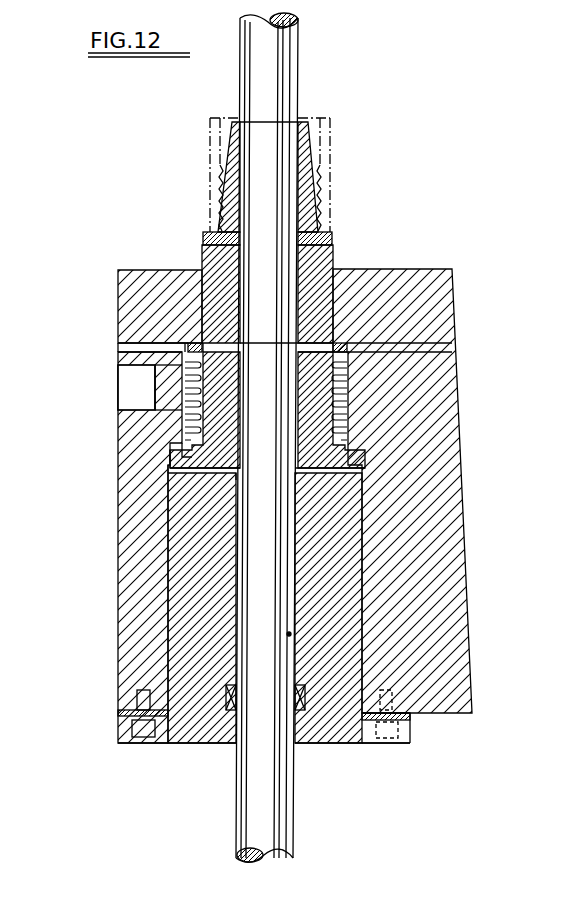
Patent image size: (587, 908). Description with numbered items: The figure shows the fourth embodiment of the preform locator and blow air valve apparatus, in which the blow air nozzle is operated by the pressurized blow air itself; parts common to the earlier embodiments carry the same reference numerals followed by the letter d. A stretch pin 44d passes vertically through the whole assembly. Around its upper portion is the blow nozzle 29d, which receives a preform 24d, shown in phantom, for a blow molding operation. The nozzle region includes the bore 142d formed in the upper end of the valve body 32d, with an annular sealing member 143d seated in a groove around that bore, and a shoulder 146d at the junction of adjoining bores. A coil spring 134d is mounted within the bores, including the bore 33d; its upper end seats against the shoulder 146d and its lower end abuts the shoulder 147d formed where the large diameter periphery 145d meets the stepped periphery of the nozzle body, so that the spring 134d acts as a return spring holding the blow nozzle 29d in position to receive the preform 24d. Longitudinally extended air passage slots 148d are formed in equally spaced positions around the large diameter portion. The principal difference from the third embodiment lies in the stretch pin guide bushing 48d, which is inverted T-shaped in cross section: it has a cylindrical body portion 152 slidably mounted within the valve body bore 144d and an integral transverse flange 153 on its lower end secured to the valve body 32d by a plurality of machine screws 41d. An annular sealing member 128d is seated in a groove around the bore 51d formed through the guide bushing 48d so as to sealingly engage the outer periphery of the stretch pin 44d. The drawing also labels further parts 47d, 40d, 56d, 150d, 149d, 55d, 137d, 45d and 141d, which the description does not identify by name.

The stretch pin 44d is at (303, 78).
The bore 47d is at (298, 120).
The gland sleeve 40d is at (308, 150).
The preform 24d is at (338, 184).
The machine screws 41d is at (332, 240).
The bore 142d is at (326, 270).
The annular sealing member 143d is at (205, 297).
The blow nozzle 29d is at (314, 322).
The coil spring 134d is at (342, 326).
The shoulder 146d is at (188, 345).
The seal 56d is at (186, 355).
The chamber 150d is at (155, 378).
The passage 149d is at (175, 405).
The bore 33d is at (350, 405).
The piston 55d is at (350, 373).
The air passage slots 148d is at (210, 494).
The shoulder 147d is at (178, 462).
The large diameter periphery 145d is at (360, 466).
The bore 137d is at (212, 472).
The chamber 45d is at (330, 490).
The valve body bore 144d is at (352, 550).
The bore 51d is at (290, 636).
The valve body 32d is at (118, 700).
The transverse flange 153 is at (118, 733).
The bolt 141d is at (137, 745).
The cylindrical body portion 152 is at (183, 682).
The annular sealing member 128d is at (297, 712).
The stretch pin guide bushing 48d is at (219, 747).